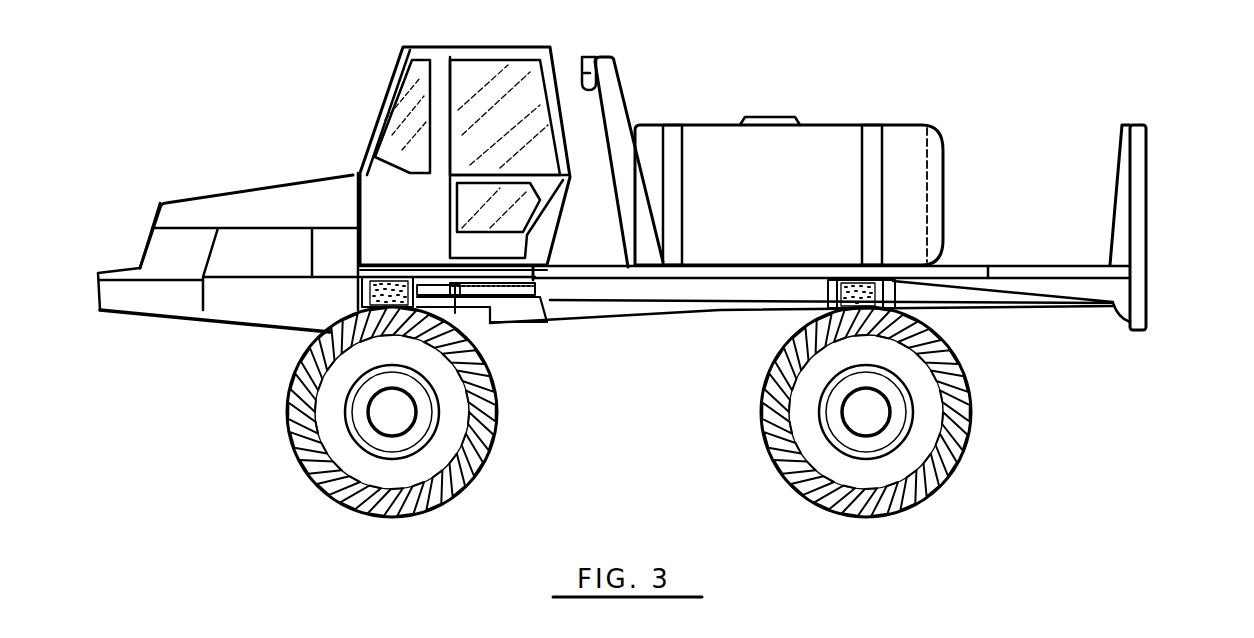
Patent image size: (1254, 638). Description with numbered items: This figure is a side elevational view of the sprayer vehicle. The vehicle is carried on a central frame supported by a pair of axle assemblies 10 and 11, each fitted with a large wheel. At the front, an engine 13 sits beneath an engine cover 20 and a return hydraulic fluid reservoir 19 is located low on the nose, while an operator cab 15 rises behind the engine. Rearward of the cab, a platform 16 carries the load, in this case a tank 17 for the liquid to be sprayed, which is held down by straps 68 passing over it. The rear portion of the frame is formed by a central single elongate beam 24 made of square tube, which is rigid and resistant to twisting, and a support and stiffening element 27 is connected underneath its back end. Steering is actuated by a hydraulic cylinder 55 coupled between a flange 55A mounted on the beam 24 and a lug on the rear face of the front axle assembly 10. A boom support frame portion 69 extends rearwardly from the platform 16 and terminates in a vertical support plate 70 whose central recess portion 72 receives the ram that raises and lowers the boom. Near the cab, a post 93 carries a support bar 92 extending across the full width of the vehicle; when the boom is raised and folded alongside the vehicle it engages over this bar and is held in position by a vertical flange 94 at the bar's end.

The axle assembly 10 is at (340, 299).
The axle assembly 11 is at (800, 312).
The engine 13 is at (280, 257).
The cab 15 is at (441, 144).
The platform 16 is at (766, 264).
The tank 17 is at (800, 143).
The return hydraulic fluid reservoir 19 is at (237, 295).
The engine cover 20 is at (226, 188).
The elongate beam 24 is at (597, 273).
The support and stiffening element 27 is at (630, 310).
The hydraulic cylinder 55 is at (493, 297).
The flange 55A is at (550, 300).
The straps 68 is at (875, 130).
The frame portion 69 is at (1047, 262).
The vertical support plate 70 is at (1152, 172).
The central recess portion 72 is at (1118, 178).
The support bar 92 is at (600, 83).
The post 93 is at (615, 72).
The vertical flange 94 is at (583, 54).